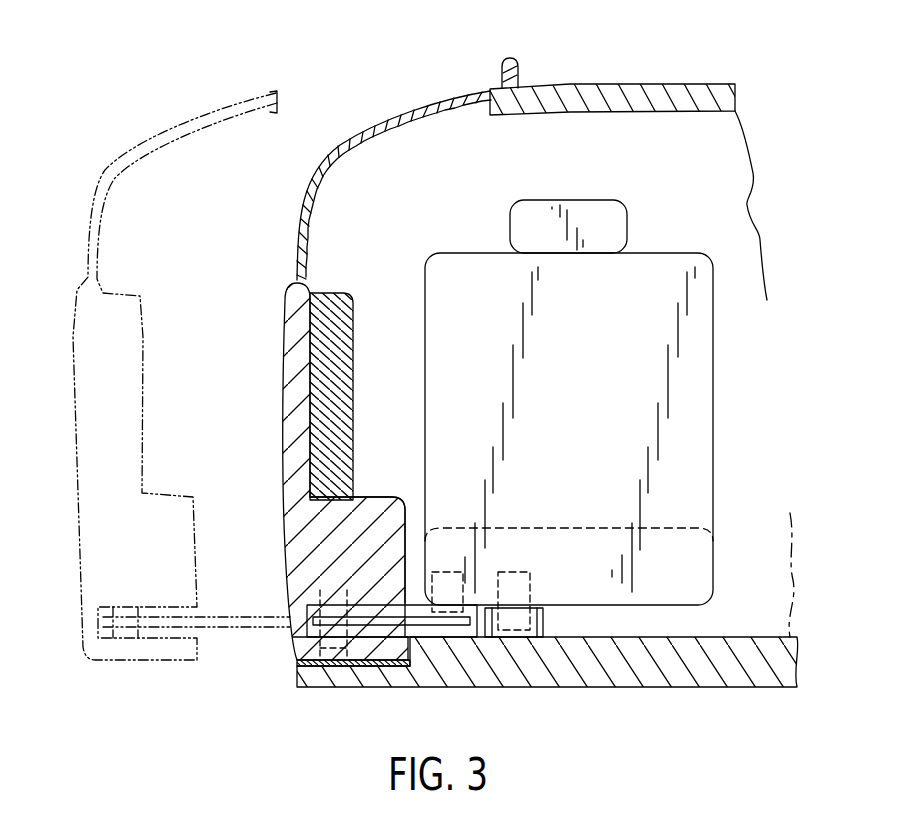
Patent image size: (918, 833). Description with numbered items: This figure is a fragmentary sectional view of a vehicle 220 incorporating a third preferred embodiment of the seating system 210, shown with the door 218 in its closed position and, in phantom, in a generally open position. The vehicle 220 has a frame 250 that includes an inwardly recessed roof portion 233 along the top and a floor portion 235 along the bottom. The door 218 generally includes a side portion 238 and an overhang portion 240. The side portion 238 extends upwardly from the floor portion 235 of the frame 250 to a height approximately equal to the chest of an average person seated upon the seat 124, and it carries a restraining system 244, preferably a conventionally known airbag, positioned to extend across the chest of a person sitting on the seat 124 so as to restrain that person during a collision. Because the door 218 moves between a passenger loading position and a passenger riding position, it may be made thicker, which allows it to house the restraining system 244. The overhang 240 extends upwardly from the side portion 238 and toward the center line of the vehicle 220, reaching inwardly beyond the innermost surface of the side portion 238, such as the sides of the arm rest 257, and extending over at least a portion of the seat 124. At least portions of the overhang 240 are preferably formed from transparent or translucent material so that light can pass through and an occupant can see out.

The seat 124 is at (662, 253).
The seating system 210 is at (316, 74).
The door 218 is at (106, 156).
The vehicle 220 is at (587, 79).
The roof portion 233 is at (492, 88).
The floor portion 235 is at (373, 684).
The side portion 238 is at (283, 455).
The overhang portion 240 is at (320, 161).
The restraining system 244 is at (331, 293).
The frame 250 is at (644, 683).
The arm rest 257 is at (370, 492).